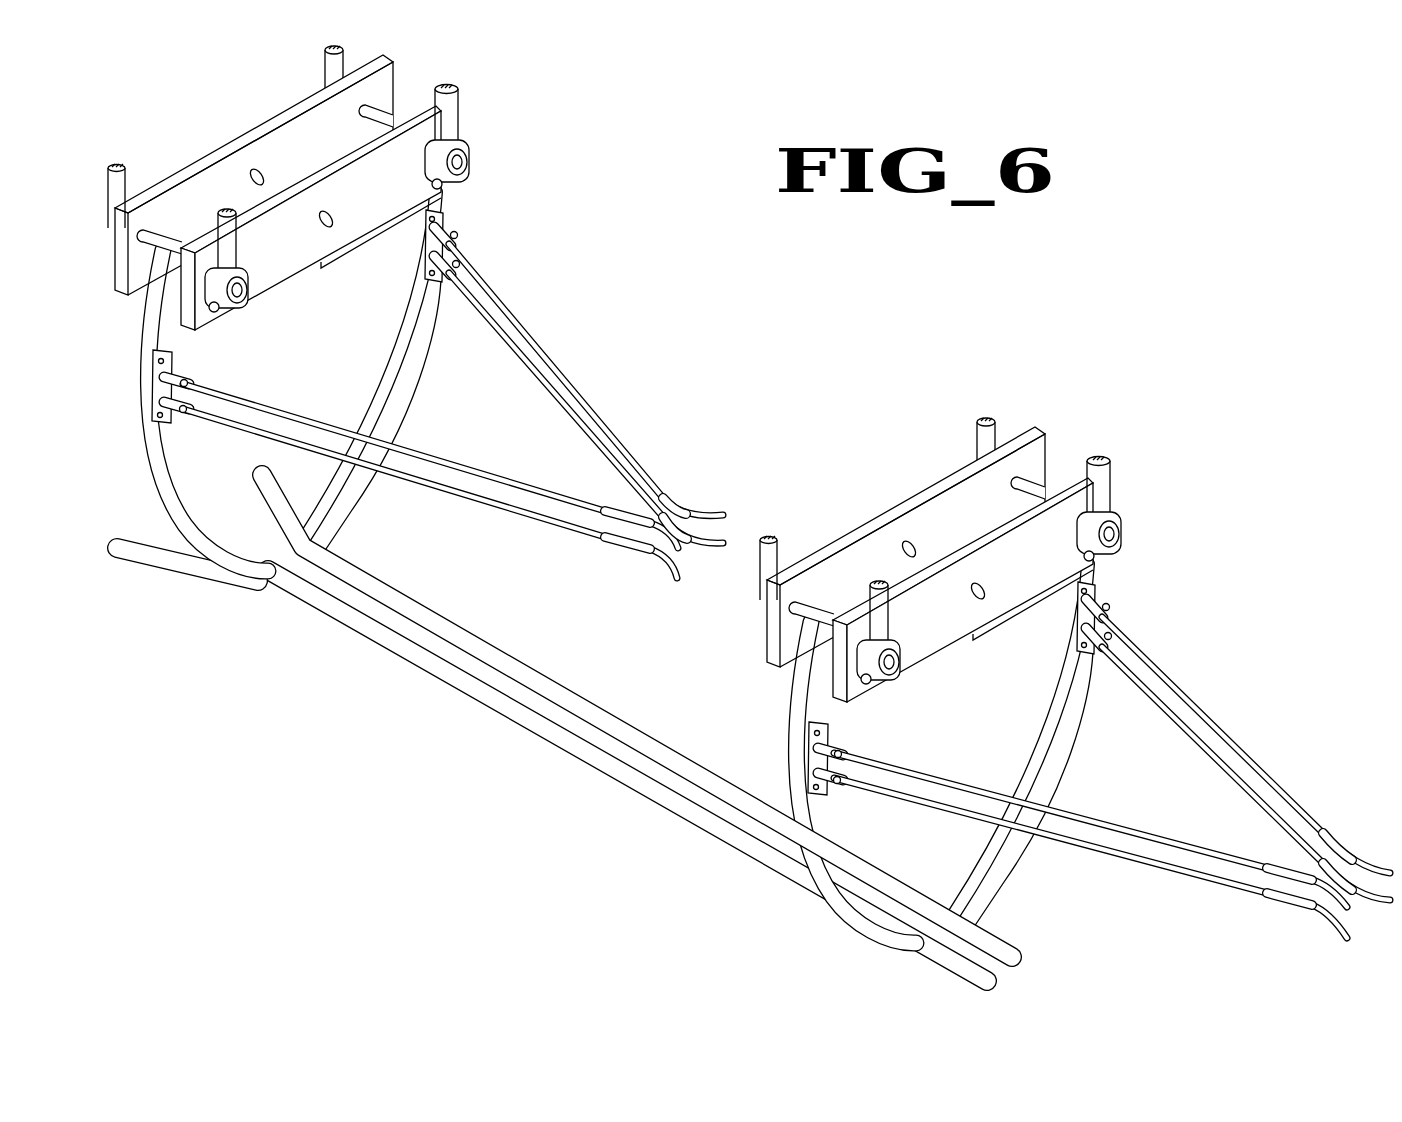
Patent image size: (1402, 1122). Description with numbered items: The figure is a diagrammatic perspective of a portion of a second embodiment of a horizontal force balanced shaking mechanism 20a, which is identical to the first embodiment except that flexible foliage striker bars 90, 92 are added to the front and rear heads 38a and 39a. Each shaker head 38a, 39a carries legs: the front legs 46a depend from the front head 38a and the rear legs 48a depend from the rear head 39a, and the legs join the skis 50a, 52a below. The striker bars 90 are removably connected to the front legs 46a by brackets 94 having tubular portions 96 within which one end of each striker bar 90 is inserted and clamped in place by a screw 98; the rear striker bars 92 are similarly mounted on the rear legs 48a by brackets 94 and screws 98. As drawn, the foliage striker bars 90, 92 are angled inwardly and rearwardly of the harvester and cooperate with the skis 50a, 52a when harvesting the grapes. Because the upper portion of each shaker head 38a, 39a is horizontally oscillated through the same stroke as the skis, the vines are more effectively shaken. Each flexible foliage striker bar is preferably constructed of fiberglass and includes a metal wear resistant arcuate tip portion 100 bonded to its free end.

The horizontal force balanced shaking mechanism 20a is at (731, 513).
The front head 38a is at (476, 135).
The rear head 39a is at (1125, 496).
The front legs 46a is at (403, 313).
The rear legs 48a is at (1055, 690).
The ski 50a is at (377, 580).
The ski 52a is at (333, 612).
The striker bars 90 is at (473, 493).
The rear striker bars 92 is at (1133, 857).
The brackets 94 is at (438, 223).
The tubular portions 96 is at (440, 249).
The screw 98 is at (458, 265).
The arcuate tip portion 100 is at (688, 516).